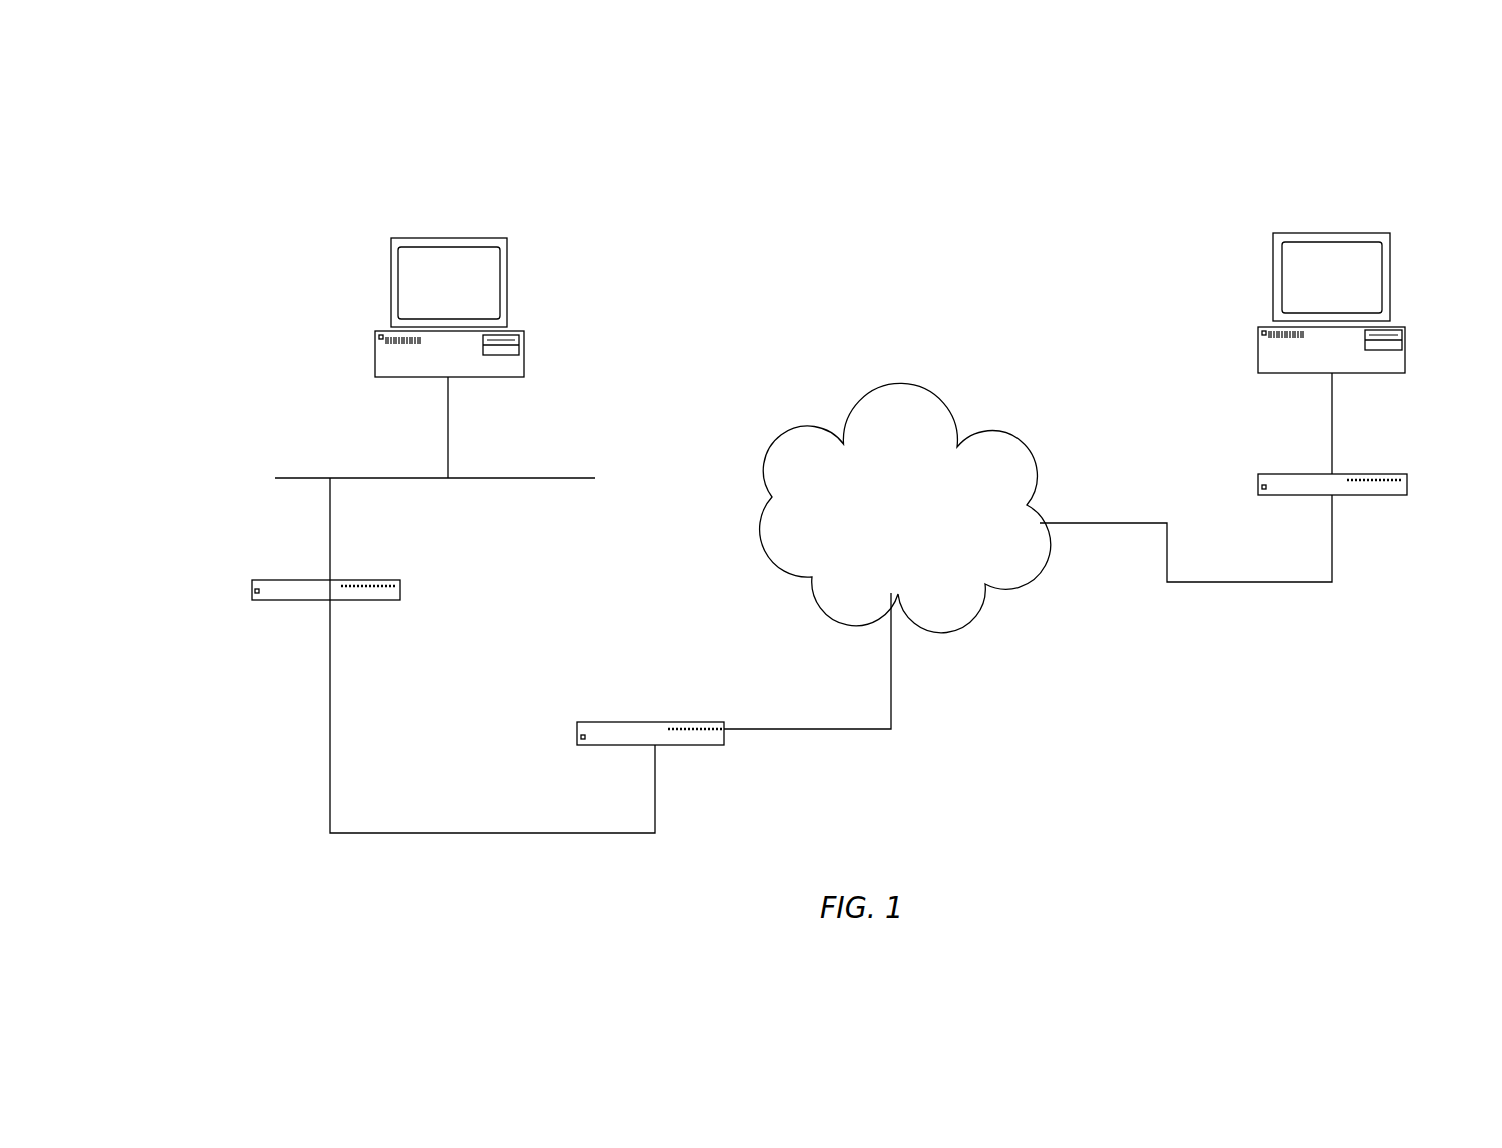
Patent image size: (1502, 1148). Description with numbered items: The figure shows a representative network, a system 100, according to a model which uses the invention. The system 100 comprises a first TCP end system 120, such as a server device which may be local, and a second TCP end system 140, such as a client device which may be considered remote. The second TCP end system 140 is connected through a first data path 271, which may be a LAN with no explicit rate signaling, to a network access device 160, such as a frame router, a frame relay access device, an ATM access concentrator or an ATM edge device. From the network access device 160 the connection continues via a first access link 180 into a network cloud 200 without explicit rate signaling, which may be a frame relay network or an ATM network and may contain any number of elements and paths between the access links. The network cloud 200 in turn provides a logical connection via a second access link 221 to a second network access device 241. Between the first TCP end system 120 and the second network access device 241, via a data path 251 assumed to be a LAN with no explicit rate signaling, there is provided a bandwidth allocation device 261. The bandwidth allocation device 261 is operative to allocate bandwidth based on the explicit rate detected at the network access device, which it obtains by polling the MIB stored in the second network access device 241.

The system 100 is at (266, 196).
The first TCP end system 120 is at (391, 307).
The second TCP end system 140 is at (1273, 303).
The network cloud 200 is at (898, 395).
The bandwidth allocation device 261 is at (252, 588).
The data path 251 is at (330, 738).
The second network access device 241 is at (614, 722).
The second access link 221 is at (968, 685).
The network access device 160 is at (1407, 483).
The first data path 271 is at (1335, 431).
The first access link 180 is at (1133, 572).